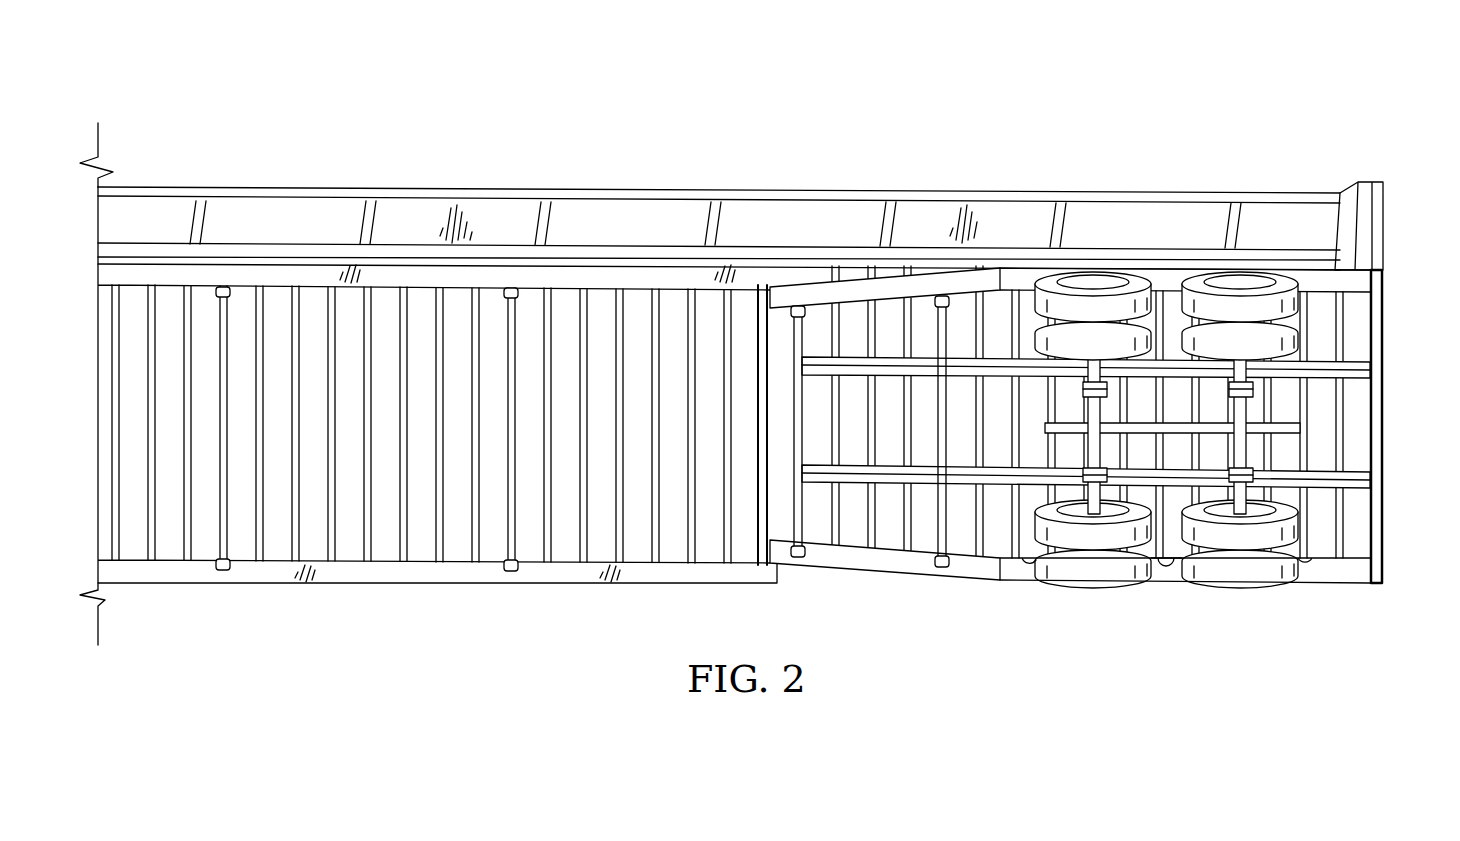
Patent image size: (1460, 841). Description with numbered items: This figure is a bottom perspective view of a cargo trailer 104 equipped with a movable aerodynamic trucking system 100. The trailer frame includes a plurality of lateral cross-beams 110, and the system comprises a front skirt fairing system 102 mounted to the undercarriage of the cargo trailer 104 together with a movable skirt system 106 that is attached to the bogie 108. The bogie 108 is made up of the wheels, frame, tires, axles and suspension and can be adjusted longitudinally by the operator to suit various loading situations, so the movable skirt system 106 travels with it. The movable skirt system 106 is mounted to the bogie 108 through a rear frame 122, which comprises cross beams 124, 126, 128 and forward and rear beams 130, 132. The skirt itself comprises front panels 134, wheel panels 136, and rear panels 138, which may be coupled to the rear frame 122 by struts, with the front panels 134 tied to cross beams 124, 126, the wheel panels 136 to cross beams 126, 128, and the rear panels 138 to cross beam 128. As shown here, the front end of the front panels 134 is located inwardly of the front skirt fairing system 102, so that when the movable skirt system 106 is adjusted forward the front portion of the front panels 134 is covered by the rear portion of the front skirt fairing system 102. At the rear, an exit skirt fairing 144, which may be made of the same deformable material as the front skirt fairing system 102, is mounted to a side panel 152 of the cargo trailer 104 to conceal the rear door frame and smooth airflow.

The movable aerodynamic trucking system 100 is at (766, 364).
The front skirt fairing system 102 is at (600, 230).
The cargo trailer 104 is at (661, 145).
The movable skirt system 106 is at (1168, 235).
The bogie 108 is at (1187, 610).
The lateral cross-beam 110 is at (300, 313).
The rear frame 122 is at (850, 348).
The cross beam 124 is at (801, 517).
The cross beam 126 is at (943, 522).
The cross beam 128 is at (1338, 327).
The forward beam 130 is at (922, 478).
The rear beam 132 is at (1352, 473).
The front panel 134 is at (853, 558).
The wheel panel 136 is at (1168, 572).
The rear panel 138 is at (1337, 572).
The exit skirt fairing 144 is at (1377, 183).
The side panel 152 is at (1285, 225).